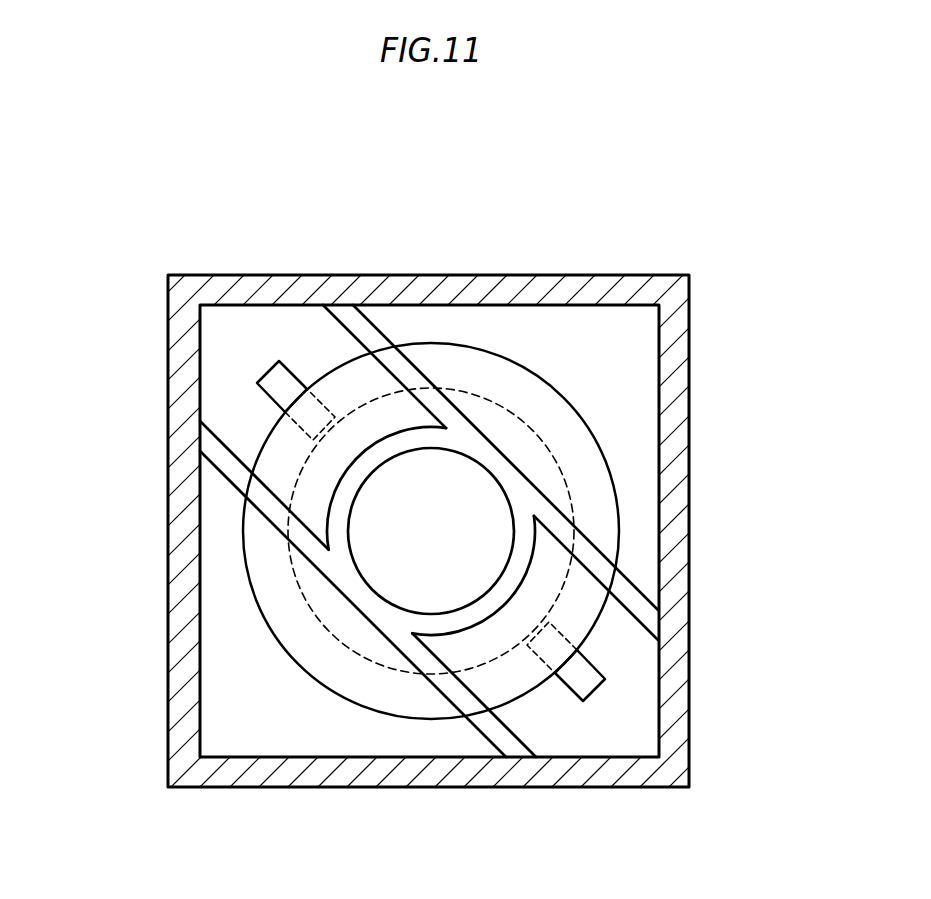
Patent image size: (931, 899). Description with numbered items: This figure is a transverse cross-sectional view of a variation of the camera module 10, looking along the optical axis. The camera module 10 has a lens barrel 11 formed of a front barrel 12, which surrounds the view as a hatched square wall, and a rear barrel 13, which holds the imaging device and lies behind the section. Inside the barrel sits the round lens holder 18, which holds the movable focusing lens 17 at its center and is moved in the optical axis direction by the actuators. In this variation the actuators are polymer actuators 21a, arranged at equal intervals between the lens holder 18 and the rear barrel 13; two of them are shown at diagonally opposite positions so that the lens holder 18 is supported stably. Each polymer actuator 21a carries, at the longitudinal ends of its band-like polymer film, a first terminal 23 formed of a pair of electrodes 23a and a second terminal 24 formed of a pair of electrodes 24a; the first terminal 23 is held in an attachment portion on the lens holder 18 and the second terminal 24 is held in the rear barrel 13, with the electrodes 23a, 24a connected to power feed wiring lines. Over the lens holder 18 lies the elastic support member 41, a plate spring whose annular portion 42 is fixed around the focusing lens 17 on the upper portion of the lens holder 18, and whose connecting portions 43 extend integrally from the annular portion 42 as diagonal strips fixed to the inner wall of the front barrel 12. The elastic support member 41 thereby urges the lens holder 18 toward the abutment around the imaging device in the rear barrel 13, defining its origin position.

The camera module 10 is at (454, 243).
The lens barrel 11 is at (519, 263).
The front barrel 12 is at (170, 580).
The rear barrel 13 is at (233, 683).
The focusing lens 17 is at (393, 563).
The lens holder 18 is at (547, 403).
The polymer actuator 21a is at (254, 351).
The first terminal 23 is at (238, 394).
The second terminal 24 is at (431, 531).
The electrode 23a is at (288, 413).
The electrode 24a is at (431, 531).
The elastic support member 41 is at (640, 564).
The annular portion 42 is at (507, 583).
The connecting portion 43 is at (359, 323).